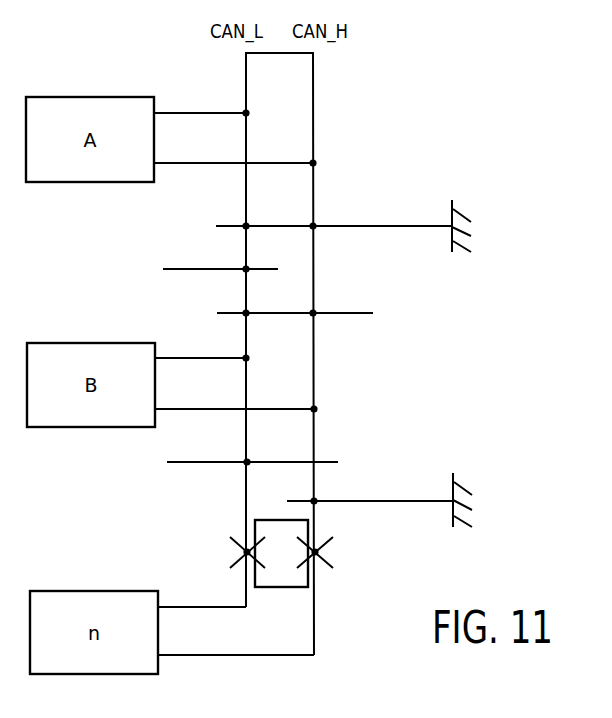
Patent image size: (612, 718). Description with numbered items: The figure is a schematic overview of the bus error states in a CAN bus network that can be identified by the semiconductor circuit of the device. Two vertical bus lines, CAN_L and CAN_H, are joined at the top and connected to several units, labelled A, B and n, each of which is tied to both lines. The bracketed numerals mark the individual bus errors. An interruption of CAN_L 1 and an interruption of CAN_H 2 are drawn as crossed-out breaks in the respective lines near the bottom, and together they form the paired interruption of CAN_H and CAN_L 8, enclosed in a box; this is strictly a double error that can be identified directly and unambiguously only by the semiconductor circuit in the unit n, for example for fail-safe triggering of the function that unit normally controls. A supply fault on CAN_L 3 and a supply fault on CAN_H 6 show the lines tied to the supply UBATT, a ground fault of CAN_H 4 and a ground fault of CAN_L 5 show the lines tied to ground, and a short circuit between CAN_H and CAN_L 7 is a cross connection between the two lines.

The interruption of CAN_L 1 is at (232, 552).
The interruption of CAN_H 2 is at (332, 552).
The supply fault on CAN_L 3 is at (190, 260).
The ground fault of CAN_H 4 is at (399, 498).
The ground fault of CAN_L 5 is at (363, 221).
The supply fault on CAN_H 6 is at (221, 451).
The short circuit between CAN_H and CAN_L 7 is at (295, 298).
The paired interruption of CAN_H and CAN_L 8 is at (281, 553).